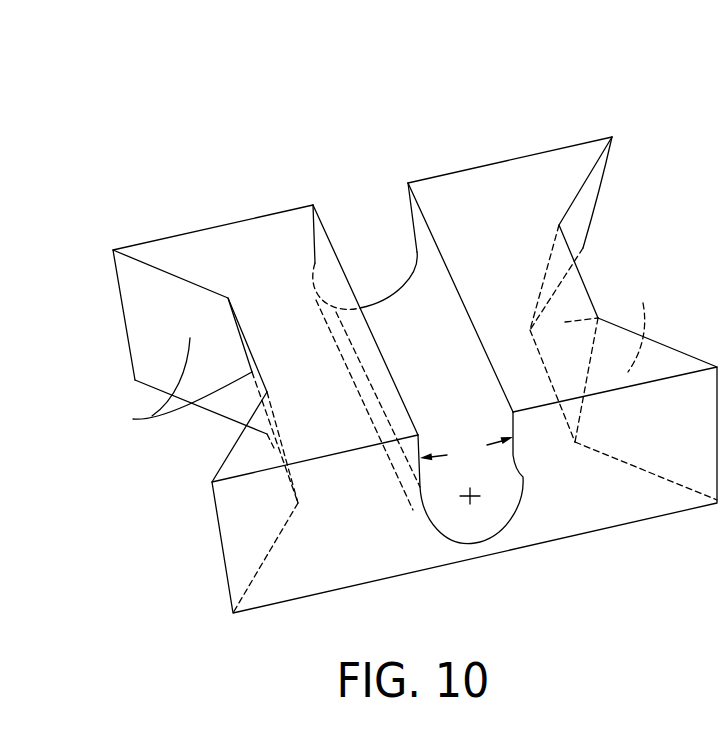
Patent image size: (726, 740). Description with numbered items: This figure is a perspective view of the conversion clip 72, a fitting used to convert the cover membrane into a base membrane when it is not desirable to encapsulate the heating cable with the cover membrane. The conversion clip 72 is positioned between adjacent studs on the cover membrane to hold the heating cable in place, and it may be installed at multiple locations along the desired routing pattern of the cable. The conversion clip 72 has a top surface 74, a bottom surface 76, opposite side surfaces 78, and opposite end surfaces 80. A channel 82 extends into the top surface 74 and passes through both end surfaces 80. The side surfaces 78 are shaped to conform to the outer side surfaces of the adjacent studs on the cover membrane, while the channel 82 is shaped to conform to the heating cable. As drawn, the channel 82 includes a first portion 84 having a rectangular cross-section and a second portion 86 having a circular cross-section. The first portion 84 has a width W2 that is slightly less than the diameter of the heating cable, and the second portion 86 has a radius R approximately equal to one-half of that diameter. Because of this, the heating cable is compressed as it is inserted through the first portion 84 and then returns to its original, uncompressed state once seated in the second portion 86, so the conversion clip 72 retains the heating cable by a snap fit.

The conversion clip 72 is at (615, 102).
The top surface 74 is at (267, 245).
The bottom surface 76 is at (625, 526).
The side surfaces 78 is at (580, 210).
The end surfaces 80 is at (178, 233).
The channel 82 is at (400, 317).
The first portion 84 is at (420, 227).
The second portion 86 is at (440, 522).
The width W2 is at (466, 448).
The radius R is at (472, 499).